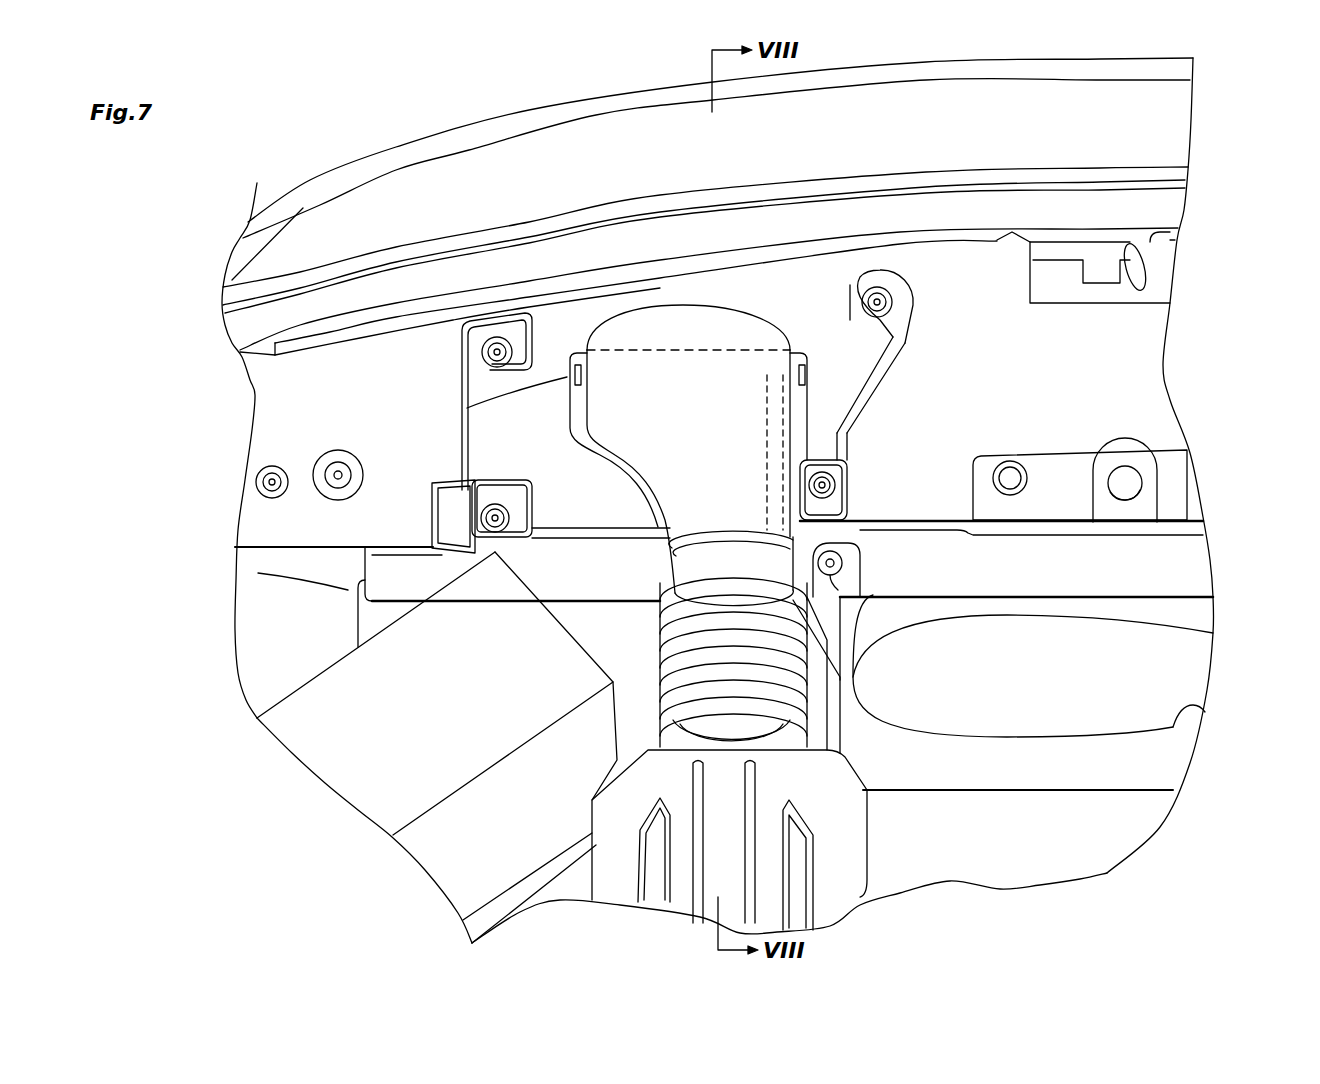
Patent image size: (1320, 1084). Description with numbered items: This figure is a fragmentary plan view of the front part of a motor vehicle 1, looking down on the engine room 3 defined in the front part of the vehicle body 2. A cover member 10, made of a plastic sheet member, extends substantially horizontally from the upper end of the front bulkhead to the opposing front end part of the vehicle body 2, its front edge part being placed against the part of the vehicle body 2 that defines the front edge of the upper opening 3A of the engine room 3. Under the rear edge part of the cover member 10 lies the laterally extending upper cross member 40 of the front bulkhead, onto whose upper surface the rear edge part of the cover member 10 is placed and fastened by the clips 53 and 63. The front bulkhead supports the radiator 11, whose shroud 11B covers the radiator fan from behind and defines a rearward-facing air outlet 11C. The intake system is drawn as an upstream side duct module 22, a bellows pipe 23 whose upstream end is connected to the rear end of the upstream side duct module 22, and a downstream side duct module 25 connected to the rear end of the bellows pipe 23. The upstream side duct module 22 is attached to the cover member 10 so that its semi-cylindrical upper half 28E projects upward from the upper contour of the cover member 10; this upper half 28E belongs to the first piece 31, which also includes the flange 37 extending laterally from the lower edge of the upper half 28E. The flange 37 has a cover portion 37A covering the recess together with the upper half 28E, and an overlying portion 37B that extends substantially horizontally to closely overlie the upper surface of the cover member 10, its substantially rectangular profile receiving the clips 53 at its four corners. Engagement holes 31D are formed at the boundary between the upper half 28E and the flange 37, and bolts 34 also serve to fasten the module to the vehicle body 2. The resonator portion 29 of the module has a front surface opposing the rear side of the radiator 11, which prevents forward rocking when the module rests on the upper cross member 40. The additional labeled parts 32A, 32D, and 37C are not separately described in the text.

The motor vehicle 1 is at (1245, 80).
The vehicle body 2 is at (1177, 131).
The engine room 3 is at (1066, 863).
The upper opening of the engine room 3A is at (1178, 241).
The cover member 10 is at (1165, 364).
The radiator 11 is at (1196, 674).
The shroud 11B is at (1117, 778).
The air outlet 11C is at (1177, 708).
The upstream side duct module 22 is at (660, 572).
The bellows pipe 23 is at (807, 660).
The downstream side duct module 25 is at (848, 856).
The upper half 28E is at (613, 420).
The resonator portion 29 is at (820, 717).
The first piece 31 is at (832, 433).
The engagement holes 31D is at (840, 428).
The rail portion 32A is at (862, 575).
The engaging portion 32D is at (470, 405).
The bolts 34 is at (687, 497).
The flange 37 is at (934, 365).
The cover portion 37A is at (848, 371).
The overlying portion 37B is at (840, 338).
The bracket fastening portion 37C is at (903, 305).
The upper cross member 40 is at (1205, 530).
The clips 53 is at (890, 295).
The clips 63 is at (1112, 478).